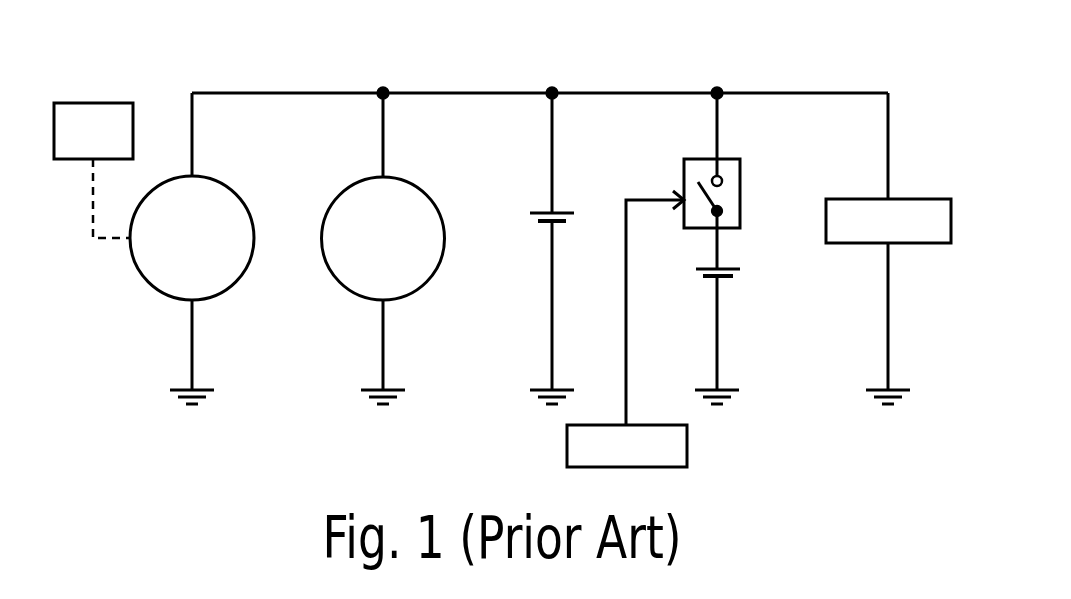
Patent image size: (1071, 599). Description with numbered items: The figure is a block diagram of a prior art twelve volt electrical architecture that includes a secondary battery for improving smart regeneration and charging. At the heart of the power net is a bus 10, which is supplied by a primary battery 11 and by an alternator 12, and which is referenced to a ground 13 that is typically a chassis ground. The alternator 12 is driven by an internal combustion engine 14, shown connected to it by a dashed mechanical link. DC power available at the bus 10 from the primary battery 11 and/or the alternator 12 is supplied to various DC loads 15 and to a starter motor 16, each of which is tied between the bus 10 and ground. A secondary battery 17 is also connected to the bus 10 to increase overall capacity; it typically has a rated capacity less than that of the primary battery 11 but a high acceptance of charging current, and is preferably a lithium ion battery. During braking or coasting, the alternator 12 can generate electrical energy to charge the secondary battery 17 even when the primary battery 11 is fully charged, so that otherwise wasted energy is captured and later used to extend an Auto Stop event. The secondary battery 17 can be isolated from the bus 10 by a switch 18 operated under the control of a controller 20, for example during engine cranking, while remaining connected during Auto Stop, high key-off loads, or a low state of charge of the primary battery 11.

The bus 10 is at (494, 93).
The primary battery 11 is at (545, 210).
The alternator 12 is at (243, 278).
The ground 13 is at (540, 388).
The internal combustion engine 14 is at (107, 101).
The DC loads 15 is at (845, 199).
The starter motor 16 is at (337, 194).
The secondary battery 17 is at (711, 278).
The switch 18 is at (697, 159).
The controller 20 is at (688, 457).